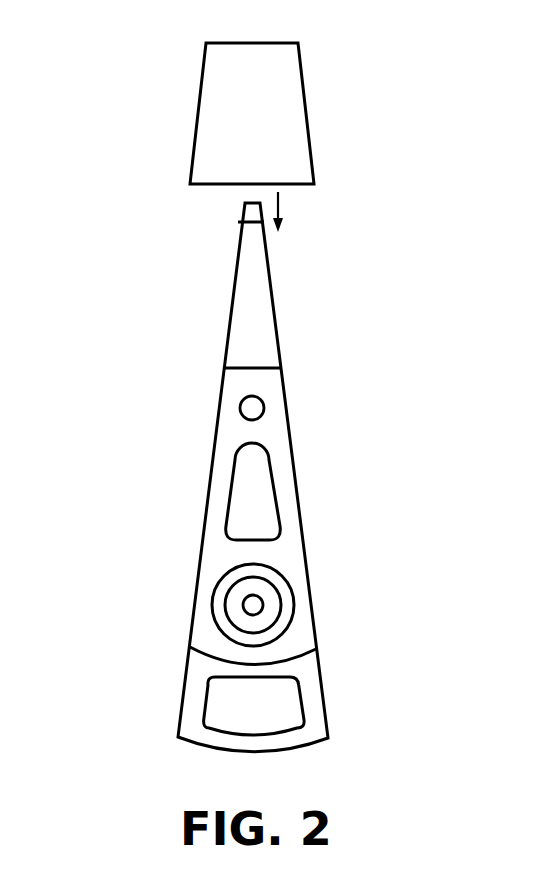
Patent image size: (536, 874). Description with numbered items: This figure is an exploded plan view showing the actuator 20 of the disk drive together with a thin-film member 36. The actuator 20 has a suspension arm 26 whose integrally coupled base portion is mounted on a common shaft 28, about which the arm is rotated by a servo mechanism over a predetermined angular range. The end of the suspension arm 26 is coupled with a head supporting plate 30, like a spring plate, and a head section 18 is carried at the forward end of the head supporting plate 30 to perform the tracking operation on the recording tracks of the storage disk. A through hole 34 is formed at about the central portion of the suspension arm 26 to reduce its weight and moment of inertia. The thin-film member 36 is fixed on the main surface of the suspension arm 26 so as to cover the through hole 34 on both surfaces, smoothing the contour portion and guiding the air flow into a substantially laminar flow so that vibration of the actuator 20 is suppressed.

The actuator 20 is at (314, 618).
The head section 18 is at (243, 212).
The suspension arm 26 is at (292, 432).
The shaft 28 is at (250, 603).
The head supporting plate 30 is at (277, 300).
The through hole 34 is at (236, 496).
The thin-film member 36 is at (198, 113).